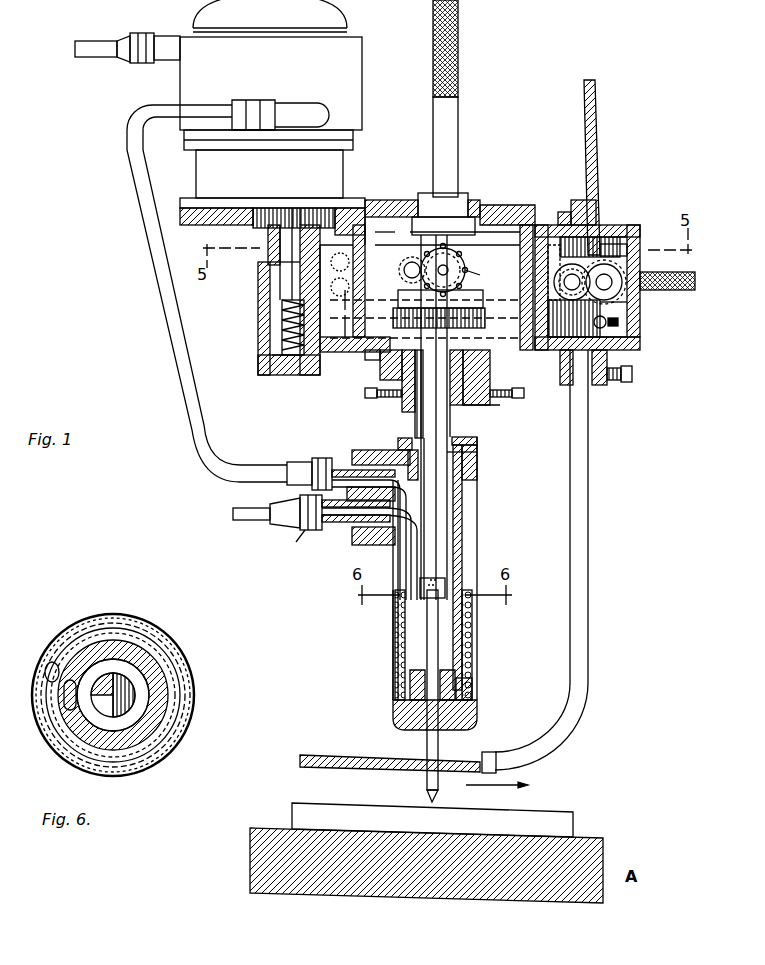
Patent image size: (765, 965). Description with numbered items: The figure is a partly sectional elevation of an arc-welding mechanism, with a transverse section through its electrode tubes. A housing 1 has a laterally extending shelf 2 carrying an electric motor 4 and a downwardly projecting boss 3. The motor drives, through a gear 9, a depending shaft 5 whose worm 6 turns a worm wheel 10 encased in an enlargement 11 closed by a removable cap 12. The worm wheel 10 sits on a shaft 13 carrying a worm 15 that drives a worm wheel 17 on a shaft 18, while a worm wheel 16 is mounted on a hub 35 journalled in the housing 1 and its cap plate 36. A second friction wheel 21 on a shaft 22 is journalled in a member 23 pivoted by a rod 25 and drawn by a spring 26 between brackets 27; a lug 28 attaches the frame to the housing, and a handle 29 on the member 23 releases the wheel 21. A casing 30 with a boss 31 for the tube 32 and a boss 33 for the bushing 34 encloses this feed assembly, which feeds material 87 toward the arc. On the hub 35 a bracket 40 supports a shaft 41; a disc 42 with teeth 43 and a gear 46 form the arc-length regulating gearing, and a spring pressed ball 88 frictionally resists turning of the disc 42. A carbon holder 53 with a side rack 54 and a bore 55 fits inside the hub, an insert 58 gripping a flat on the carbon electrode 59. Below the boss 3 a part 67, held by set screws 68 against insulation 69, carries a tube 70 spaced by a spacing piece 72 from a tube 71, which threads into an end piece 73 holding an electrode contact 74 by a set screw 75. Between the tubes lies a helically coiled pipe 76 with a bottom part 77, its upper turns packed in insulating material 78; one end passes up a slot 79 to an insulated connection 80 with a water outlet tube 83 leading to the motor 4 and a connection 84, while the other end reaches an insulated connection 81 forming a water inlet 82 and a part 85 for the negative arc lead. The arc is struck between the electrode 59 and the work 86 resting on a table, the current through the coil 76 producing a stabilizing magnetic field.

In FIG. 1, the housing 1 is at (340, 350).
In FIG. 1, the shelf 2 is at (198, 225).
In FIG. 1, the boss 3 is at (490, 395).
In FIG. 1, the electric motor 4 is at (353, 138).
In FIG. 1, the shaft 5 is at (268, 262).
In FIG. 1, the worm 6 is at (285, 335).
In FIG. 1, the gear 9 is at (325, 212).
In FIG. 1, the worm wheel 10 is at (270, 368).
In FIG. 1, the enlargement 11 is at (310, 375).
In FIG. 1, the removable cap 12 is at (258, 312).
In FIG. 1, the shaft 13 is at (341, 293).
In FIG. 1, the worm 15 is at (555, 350).
In FIG. 1, the worm wheel 16 is at (380, 325).
In FIG. 1, the worm wheel 17 is at (592, 310).
In FIG. 1, the shaft 18 is at (478, 630).
In FIG. 1, the friction wheel 21 is at (626, 268).
In FIG. 1, the shaft 22 is at (618, 302).
In FIG. 1, the member 23 is at (606, 322).
In FIG. 1, the rod 25 is at (607, 360).
In FIG. 1, the spring 26 is at (614, 238).
In FIG. 1, the brackets 27 is at (627, 250).
In FIG. 1, the lug 28 is at (545, 235).
In FIG. 1, the handle 29 is at (695, 281).
In FIG. 1, the casing 30 is at (627, 340).
In FIG. 1, the boss 31 is at (605, 385).
In FIG. 1, the tube 32 is at (590, 515).
In FIG. 1, the boss 33 is at (600, 240).
In FIG. 1, the bushing 34 is at (596, 205).
In FIG. 1, the hub 35 is at (447, 243).
In FIG. 1, the cap plate 36 is at (495, 200).
In FIG. 1, the bracket 40 is at (400, 270).
In FIG. 1, the shaft 41 is at (486, 279).
In FIG. 1, the disc 42 is at (463, 267).
In FIG. 1, the teeth 43 is at (460, 252).
In FIG. 1, the gear 46 is at (341, 261).
In FIG. 1, the carbon holder 53 is at (457, 135).
In FIG. 6, the carbon holder 53 is at (113, 673).
In FIG. 1, the rack 54 is at (415, 420).
In FIG. 6, the bore 55 is at (117, 675).
In FIG. 6, the insert 58 is at (125, 710).
In FIG. 1, the carbon electrode 59 is at (440, 760).
In FIG. 6, the carbon electrode 59 is at (95, 660).
In FIG. 1, the part 67 is at (463, 432).
In FIG. 1, the set screws 68 is at (370, 398).
In FIG. 1, the insulation 69 is at (480, 412).
In FIG. 1, the tube 70 is at (478, 515).
In FIG. 6, the tube 70 is at (176, 658).
In FIG. 1, the tube 71 is at (462, 500).
In FIG. 6, the tube 71 is at (150, 653).
In FIG. 1, the spacing piece 72 is at (478, 462).
In FIG. 1, the end piece 73 is at (472, 715).
In FIG. 1, the electrode contact 74 is at (400, 728).
In FIG. 1, the set screw 75 is at (472, 688).
In FIG. 1, the helically coiled pipe 76 is at (472, 655).
In FIG. 6, the helically coiled pipe 76 is at (180, 678).
In FIG. 1, the bottom part 77 is at (393, 690).
In FIG. 6, the insulating material 78 is at (149, 703).
In FIG. 6, the slot 79 is at (58, 728).
In FIG. 1, the insulated connection 80 is at (320, 458).
In FIG. 1, the insulated connection 81 is at (291, 545).
In FIG. 1, the water inlet 82 is at (236, 512).
In FIG. 1, the water outlet tube 83 is at (257, 102).
In FIG. 1, the connection 84 is at (118, 58).
In FIG. 1, the part 85 is at (345, 530).
In FIG. 1, the work 86 is at (573, 822).
In FIG. 1, the material 87 is at (598, 120).
In FIG. 1, the spring pressed ball 88 is at (398, 298).